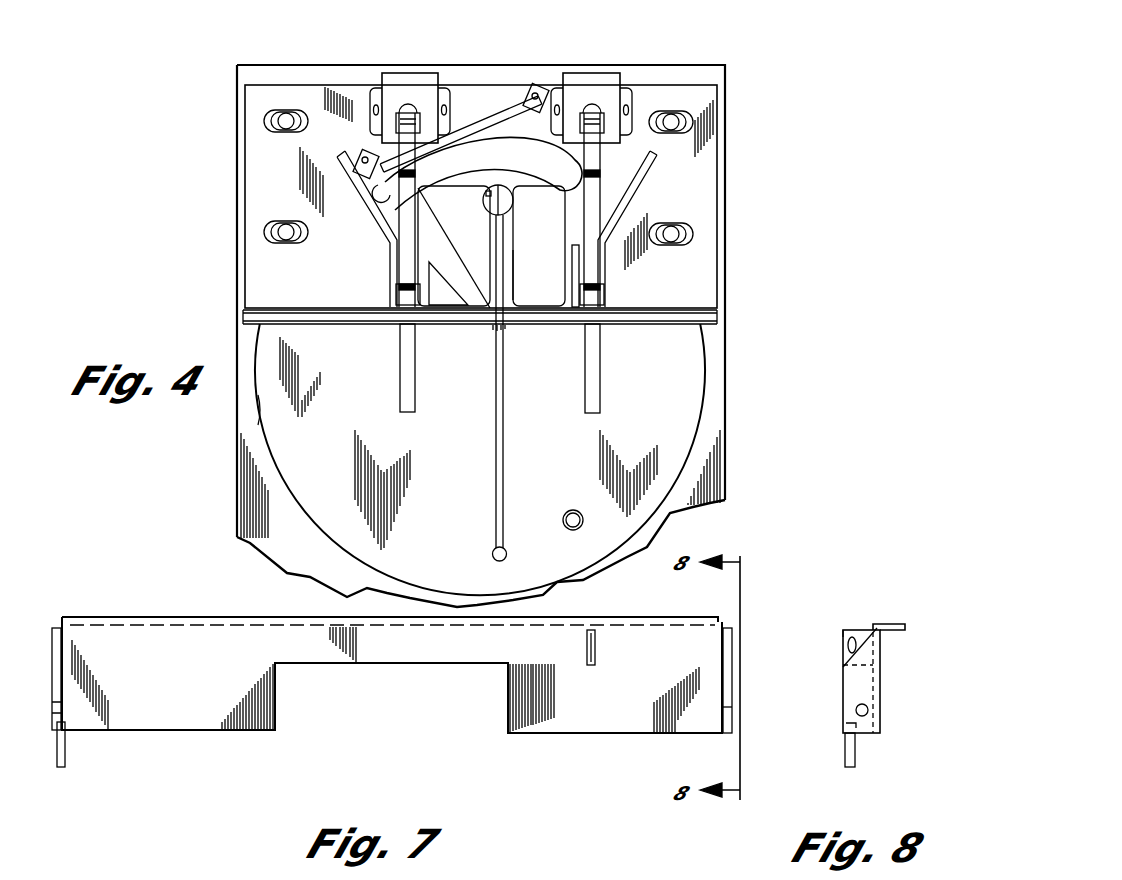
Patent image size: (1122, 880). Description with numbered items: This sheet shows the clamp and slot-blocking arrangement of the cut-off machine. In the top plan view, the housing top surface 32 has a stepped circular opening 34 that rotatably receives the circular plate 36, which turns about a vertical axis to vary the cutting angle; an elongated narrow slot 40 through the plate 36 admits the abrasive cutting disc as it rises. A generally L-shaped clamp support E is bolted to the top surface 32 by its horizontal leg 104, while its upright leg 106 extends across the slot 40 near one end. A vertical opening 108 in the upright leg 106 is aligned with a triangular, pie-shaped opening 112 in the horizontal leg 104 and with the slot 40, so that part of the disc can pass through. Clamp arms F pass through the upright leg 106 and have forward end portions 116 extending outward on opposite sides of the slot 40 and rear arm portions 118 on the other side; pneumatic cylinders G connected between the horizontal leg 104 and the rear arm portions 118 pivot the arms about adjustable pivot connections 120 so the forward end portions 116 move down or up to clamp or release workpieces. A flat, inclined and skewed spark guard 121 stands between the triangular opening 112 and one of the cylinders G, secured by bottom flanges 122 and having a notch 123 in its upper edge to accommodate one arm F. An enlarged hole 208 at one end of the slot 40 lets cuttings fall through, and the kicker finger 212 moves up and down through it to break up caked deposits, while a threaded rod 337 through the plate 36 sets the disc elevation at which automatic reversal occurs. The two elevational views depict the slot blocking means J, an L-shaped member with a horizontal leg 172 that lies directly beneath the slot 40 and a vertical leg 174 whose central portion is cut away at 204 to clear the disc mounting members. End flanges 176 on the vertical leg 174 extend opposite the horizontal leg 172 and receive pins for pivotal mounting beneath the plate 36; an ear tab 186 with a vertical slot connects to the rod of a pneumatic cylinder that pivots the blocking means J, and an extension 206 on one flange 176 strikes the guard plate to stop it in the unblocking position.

In FIG. 4, the top surface 32 is at (715, 407).
In FIG. 4, the stepped circular opening 34 is at (258, 405).
In FIG. 4, the circular plate 36 is at (683, 376).
In FIG. 4, the slot 40 is at (503, 403).
In FIG. 4, the horizontal leg 104 is at (262, 167).
In FIG. 4, the upright leg 106 is at (720, 318).
In FIG. 4, the vertical opening 108 is at (494, 335).
In FIG. 4, the triangular opening 112 is at (513, 266).
In FIG. 4, the forward end portions 116 is at (400, 390).
In FIG. 4, the rear arm portions 118 is at (407, 203).
In FIG. 4, the pivot connections 120 is at (397, 291).
In FIG. 4, the spark guard 121 is at (493, 122).
In FIG. 4, the flanges 122 is at (368, 156).
In FIG. 4, the notch 123 is at (368, 180).
In FIG. 4, the horizontal leg 172 is at (513, 176).
In FIG. 8, the horizontal leg 172 is at (900, 625).
In FIG. 7, the vertical leg 174 is at (173, 715).
In FIG. 8, the vertical leg 174 is at (880, 710).
In FIG. 7, the end flanges 176 is at (52, 652).
In FIG. 8, the end flanges 176 is at (852, 694).
In FIG. 7, the ear tab 186 is at (596, 657).
In FIG. 8, the ear tab 186 is at (858, 629).
In FIG. 7, the cut-away portion 204 is at (392, 667).
In FIG. 7, the extension 206 is at (66, 765).
In FIG. 8, the extension 206 is at (848, 768).
In FIG. 4, the enlarged hole 208 is at (512, 200).
In FIG. 4, the finger 212 is at (485, 198).
In FIG. 4, the threaded rod 337 is at (571, 510).
In FIG. 4, the clamp support E is at (700, 169).
In FIG. 4, the clamp arms F is at (422, 358).
In FIG. 4, the pneumatic cylinders G is at (415, 93).
In FIG. 7, the slot blocking means J is at (411, 668).
In FIG. 8, the slot blocking means J is at (866, 650).